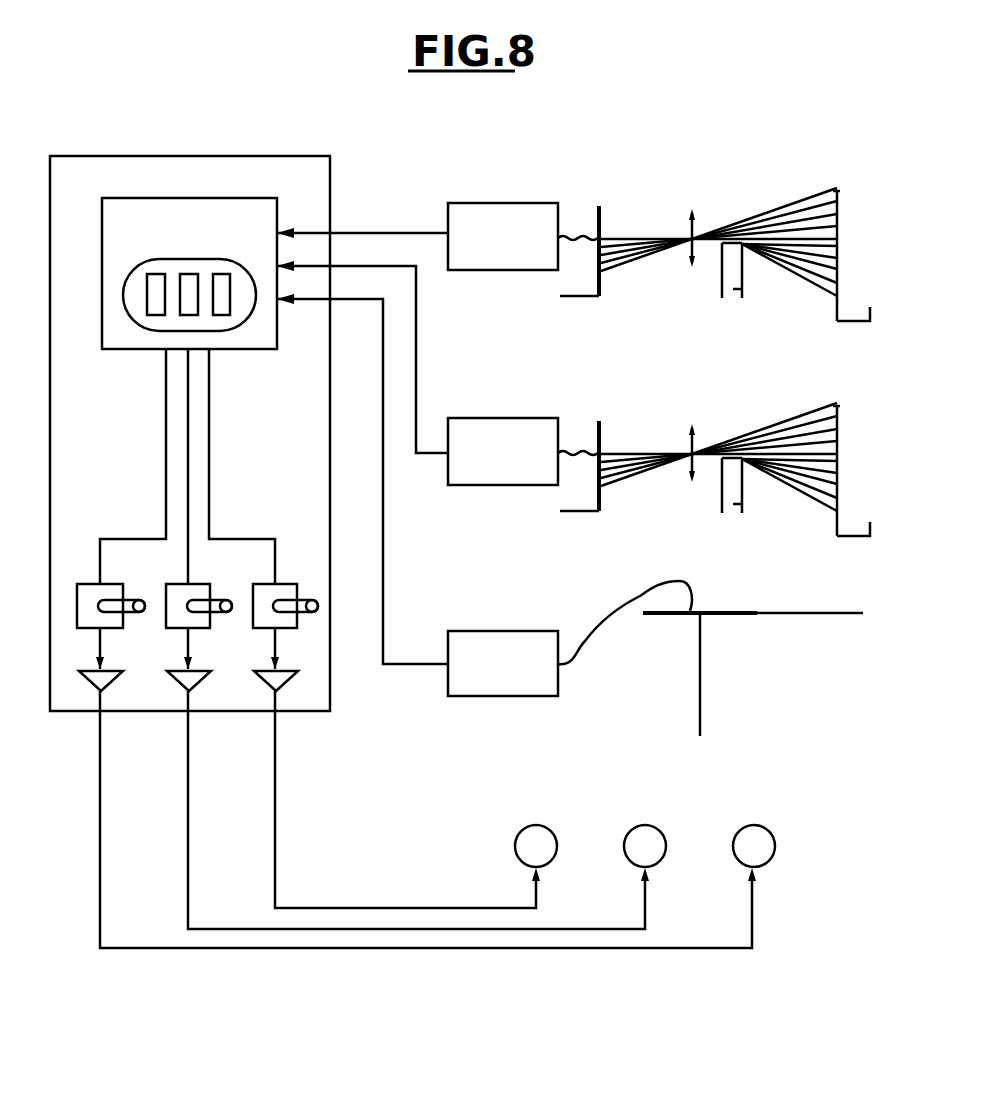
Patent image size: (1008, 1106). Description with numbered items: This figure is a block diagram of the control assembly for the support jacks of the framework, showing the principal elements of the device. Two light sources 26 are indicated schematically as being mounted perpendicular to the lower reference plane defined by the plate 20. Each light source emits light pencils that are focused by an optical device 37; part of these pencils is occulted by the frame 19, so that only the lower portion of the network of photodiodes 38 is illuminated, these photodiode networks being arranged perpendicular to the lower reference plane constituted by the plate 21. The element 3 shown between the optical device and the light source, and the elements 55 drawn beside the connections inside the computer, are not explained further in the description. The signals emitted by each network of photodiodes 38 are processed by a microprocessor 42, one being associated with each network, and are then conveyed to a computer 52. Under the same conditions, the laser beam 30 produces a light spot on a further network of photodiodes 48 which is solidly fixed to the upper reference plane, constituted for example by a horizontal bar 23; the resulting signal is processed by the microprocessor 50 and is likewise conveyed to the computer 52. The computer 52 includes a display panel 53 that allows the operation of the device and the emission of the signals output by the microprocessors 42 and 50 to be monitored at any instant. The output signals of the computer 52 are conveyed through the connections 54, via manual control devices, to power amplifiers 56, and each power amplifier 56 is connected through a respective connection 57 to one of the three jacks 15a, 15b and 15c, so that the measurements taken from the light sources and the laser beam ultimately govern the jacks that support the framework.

The slit 3 is at (735, 242).
The jack 15a is at (540, 840).
The jack 15b is at (649, 840).
The jack 15c is at (758, 840).
The frame 19 is at (742, 288).
The plate 20 is at (870, 408).
The plate 21 is at (560, 296).
The horizontal bar 23 is at (818, 610).
The light source 26 is at (840, 263).
The laser beam 30 is at (700, 697).
The optical device 37 is at (700, 222).
The network of photodiodes 38 is at (597, 205).
The microprocessor 42 is at (498, 222).
The network of photodiodes 48 is at (733, 610).
The microprocessor 50 is at (492, 650).
The computer 52 is at (198, 197).
The display panel 53 is at (162, 258).
The connections 54 is at (209, 437).
The adjustment knobs 55 is at (112, 592).
The power amplifier 56 is at (113, 672).
The connection 57 is at (100, 845).